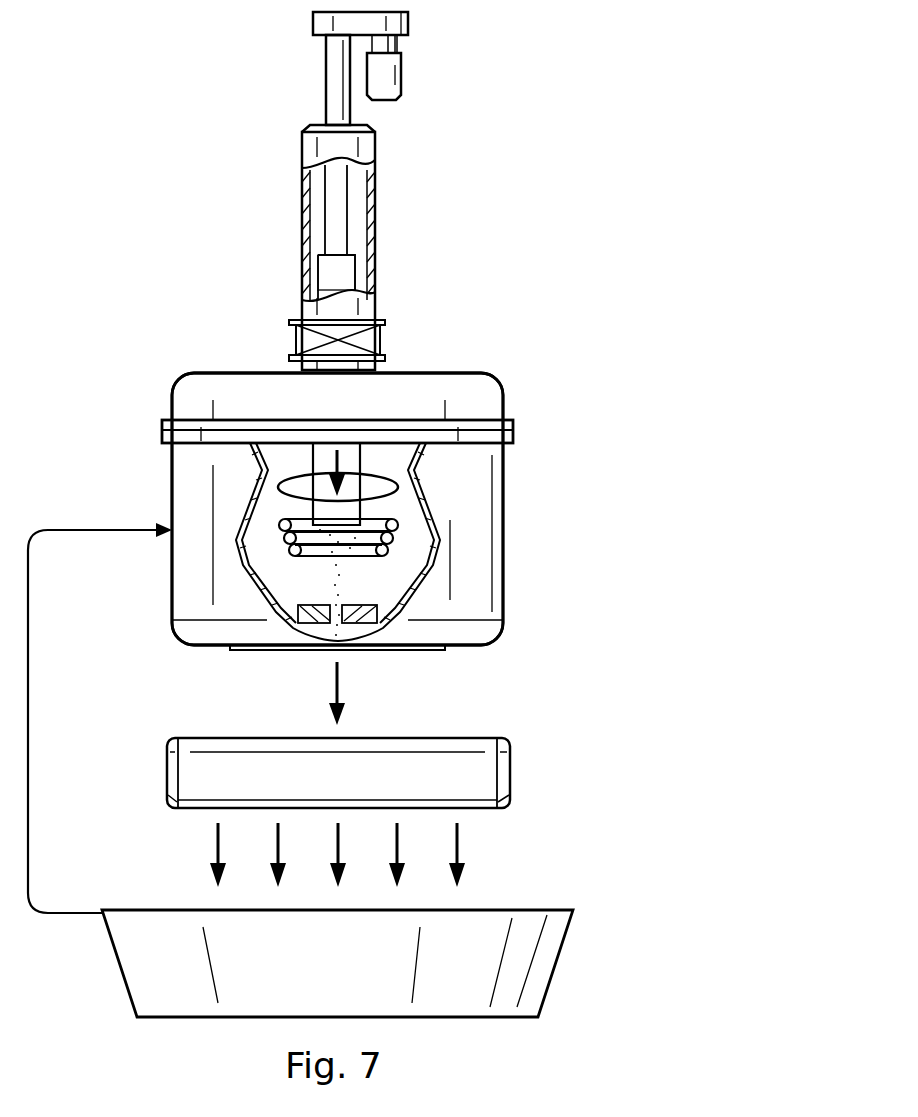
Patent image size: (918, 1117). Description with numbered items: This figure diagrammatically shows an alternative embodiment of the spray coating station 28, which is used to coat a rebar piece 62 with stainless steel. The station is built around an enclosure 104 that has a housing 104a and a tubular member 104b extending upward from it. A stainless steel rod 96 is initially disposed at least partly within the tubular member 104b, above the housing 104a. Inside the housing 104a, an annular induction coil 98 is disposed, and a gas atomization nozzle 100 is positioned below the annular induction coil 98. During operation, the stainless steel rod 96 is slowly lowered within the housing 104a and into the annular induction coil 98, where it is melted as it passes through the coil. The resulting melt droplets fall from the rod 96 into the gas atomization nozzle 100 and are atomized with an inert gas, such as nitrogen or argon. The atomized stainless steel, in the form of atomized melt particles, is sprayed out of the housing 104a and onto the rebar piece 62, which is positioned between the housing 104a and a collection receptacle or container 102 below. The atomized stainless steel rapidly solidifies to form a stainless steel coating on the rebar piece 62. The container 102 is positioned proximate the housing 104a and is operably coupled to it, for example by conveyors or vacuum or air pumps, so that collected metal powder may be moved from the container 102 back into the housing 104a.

The spray coating station 28 is at (122, 207).
The rebar piece 62 is at (167, 783).
The stainless steel rod 96 is at (360, 270).
The annular induction coil 98 is at (395, 521).
The gas atomization nozzle 100 is at (337, 635).
The collection receptacle or container 102 is at (557, 963).
The enclosure 104 is at (503, 551).
The housing 104a is at (503, 489).
The tubular member 104b is at (302, 150).